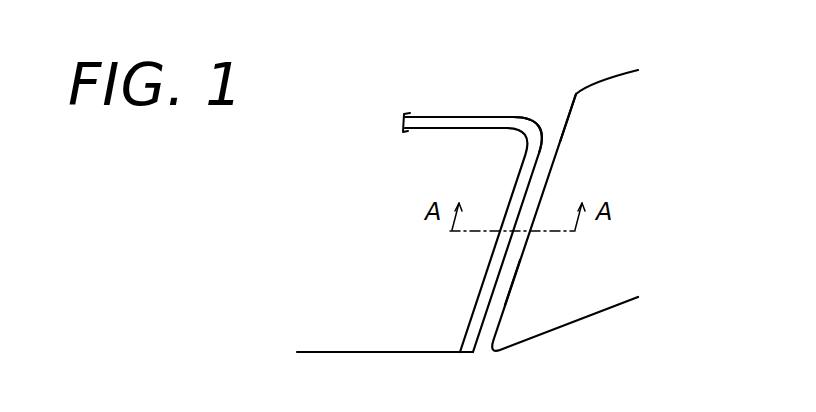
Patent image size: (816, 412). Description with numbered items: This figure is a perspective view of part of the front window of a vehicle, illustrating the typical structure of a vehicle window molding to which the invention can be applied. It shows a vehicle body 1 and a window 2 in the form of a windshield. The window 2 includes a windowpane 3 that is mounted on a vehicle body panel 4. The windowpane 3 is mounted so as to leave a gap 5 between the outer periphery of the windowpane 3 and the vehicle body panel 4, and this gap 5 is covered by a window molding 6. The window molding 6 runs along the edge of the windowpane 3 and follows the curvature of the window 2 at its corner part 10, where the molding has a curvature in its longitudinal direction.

The vehicle body 1 is at (477, 97).
The window 2 is at (395, 183).
The windowpane 3 is at (368, 278).
The vehicle body panel 4 is at (547, 167).
The gap 5 is at (543, 134).
The window molding 6 is at (490, 280).
The corner part 10 is at (532, 125).